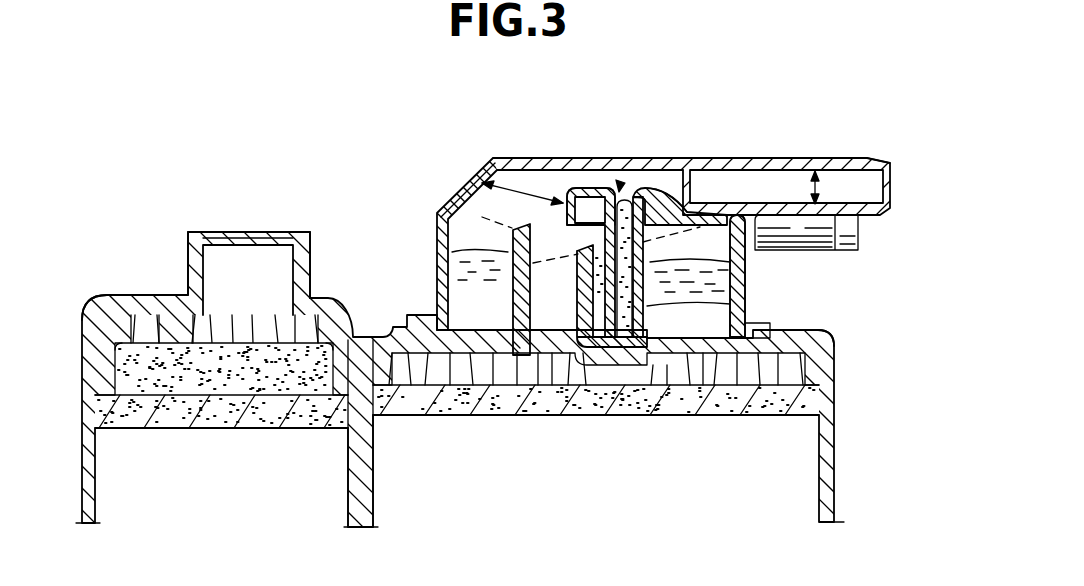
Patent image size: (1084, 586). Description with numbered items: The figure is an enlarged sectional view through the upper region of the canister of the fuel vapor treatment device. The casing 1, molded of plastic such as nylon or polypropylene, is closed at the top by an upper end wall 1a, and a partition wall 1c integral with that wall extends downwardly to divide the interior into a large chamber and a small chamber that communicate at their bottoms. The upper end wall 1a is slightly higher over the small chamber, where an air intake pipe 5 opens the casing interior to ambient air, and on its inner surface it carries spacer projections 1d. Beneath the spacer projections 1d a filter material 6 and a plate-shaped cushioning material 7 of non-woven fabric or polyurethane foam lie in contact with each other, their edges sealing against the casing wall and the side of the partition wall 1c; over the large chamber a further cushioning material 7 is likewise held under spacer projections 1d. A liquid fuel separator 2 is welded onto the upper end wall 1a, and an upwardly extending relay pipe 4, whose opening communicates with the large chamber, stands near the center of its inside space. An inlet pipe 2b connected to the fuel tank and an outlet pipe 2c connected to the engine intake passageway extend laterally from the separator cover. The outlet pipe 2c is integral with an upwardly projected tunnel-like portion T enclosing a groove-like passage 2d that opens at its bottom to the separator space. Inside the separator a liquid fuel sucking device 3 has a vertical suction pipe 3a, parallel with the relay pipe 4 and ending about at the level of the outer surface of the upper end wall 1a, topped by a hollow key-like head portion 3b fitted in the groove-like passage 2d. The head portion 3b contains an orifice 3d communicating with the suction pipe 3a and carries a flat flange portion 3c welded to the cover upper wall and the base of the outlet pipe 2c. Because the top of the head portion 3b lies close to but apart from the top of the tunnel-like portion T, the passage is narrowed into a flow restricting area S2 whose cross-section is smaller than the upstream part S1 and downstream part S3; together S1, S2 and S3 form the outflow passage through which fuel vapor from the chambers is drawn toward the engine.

The casing 1 is at (825, 465).
The upper end wall 1a is at (110, 300).
The partition wall 1c is at (367, 490).
The spacer projections 1d is at (243, 333).
The liquid fuel separator 2 is at (437, 249).
The inlet pipe 2b is at (820, 240).
The outlet pipe 2c is at (829, 165).
The groove-like passage 2d is at (537, 177).
The liquid fuel sucking device 3 is at (664, 182).
The suction pipe 3a is at (733, 306).
The key-like head portion 3b is at (580, 187).
The flange portion 3c is at (714, 224).
The orifice 3d is at (654, 186).
The relay pipe 4 is at (517, 307).
The air intake pipe 5 is at (213, 277).
The filter material 6 is at (282, 380).
The cushioning material 7 is at (133, 413).
The upstream part S1 is at (507, 188).
The narrowed part S2 is at (620, 182).
The downstream part S3 is at (813, 178).
The tunnel-like portion T is at (608, 186).